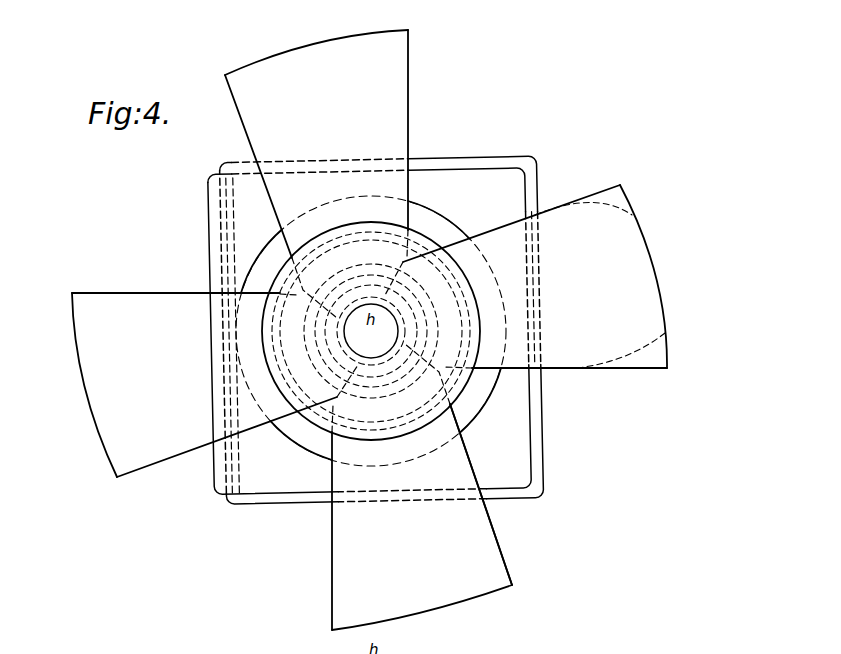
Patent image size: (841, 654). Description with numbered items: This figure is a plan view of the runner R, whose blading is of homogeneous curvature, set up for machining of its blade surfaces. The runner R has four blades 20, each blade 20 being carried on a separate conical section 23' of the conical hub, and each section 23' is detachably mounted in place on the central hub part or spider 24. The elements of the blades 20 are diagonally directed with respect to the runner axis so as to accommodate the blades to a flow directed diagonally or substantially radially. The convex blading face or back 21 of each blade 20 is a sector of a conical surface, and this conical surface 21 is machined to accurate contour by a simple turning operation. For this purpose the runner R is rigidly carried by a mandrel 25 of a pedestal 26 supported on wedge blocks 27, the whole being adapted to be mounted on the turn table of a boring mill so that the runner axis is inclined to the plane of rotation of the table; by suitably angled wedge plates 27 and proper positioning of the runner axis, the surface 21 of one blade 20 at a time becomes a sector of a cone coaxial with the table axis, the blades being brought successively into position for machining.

The blade 20 is at (259, 72).
The convex blading face or back 21 is at (369, 330).
The conical section of the hub 23' is at (373, 334).
The central hub part or spider 24 is at (458, 381).
The mandrel 25 is at (371, 331).
The pedestal 26 is at (463, 417).
The wedge blocks 27 is at (280, 500).
The runner R is at (507, 557).